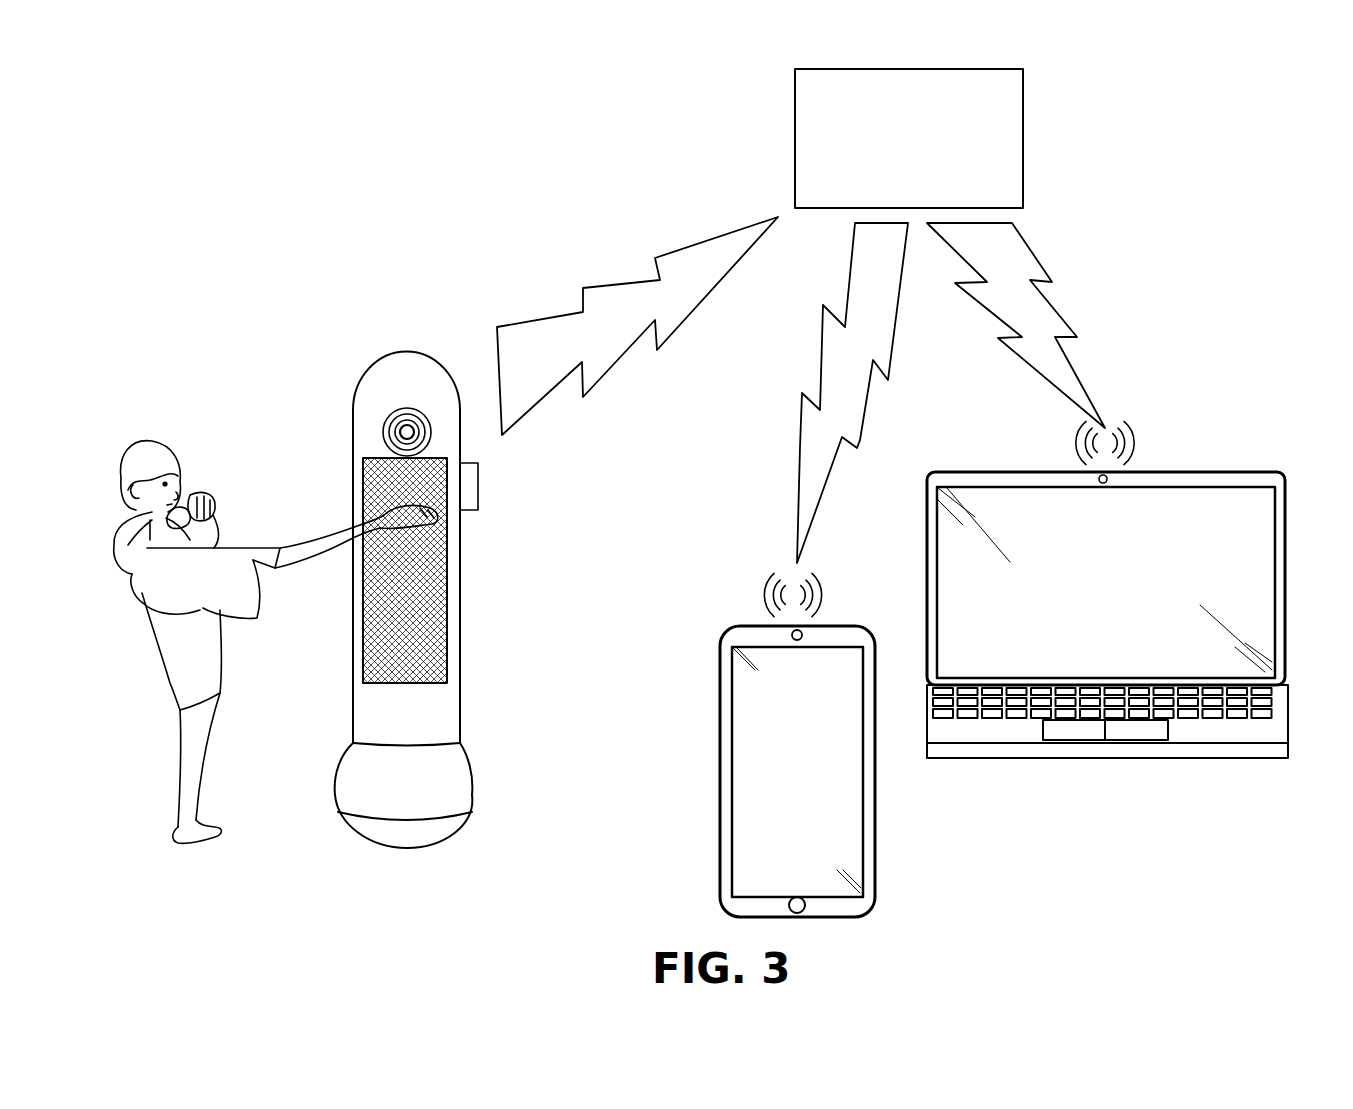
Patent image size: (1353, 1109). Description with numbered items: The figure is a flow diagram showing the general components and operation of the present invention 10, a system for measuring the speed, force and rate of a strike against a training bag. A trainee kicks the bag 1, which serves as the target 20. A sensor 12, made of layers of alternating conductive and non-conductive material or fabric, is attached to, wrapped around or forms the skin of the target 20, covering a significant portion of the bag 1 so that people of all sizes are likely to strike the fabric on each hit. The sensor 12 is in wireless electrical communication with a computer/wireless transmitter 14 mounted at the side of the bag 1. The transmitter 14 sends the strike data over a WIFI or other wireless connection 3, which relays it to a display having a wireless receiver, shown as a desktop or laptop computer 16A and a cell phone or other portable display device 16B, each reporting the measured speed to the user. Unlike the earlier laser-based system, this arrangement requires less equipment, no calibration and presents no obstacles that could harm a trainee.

The present invention 10 is at (490, 218).
The bag 1 is at (350, 400).
The sensor 12 is at (443, 555).
The computer/wireless transmitter 14 is at (468, 488).
The target 20 is at (459, 687).
The wireless connection 3 is at (1024, 125).
The desktop or laptop computer 16A is at (1237, 472).
The cell phone or other portable display device 16B is at (720, 810).